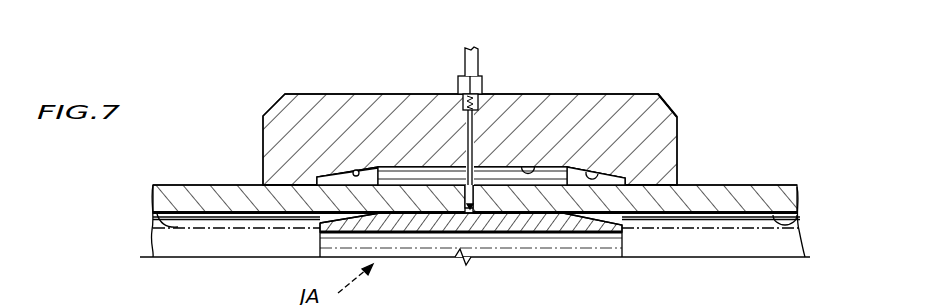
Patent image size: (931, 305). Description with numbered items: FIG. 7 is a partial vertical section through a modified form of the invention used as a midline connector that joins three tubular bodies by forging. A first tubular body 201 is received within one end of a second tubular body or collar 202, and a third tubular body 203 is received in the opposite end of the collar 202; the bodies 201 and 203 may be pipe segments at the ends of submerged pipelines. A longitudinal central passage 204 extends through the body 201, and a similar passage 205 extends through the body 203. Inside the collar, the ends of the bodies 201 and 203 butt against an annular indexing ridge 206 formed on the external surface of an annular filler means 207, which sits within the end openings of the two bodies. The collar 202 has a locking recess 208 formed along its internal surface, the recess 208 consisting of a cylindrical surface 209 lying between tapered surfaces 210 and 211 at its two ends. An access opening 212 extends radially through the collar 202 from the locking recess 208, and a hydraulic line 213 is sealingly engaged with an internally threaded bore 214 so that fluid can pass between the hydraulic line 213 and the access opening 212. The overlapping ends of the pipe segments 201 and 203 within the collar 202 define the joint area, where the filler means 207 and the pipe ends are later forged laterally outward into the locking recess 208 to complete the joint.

The first tubular body 201 is at (753, 190).
The second tubular body or collar 202 is at (667, 150).
The third tubular body 203 is at (196, 190).
The longitudinal central passage 204 is at (797, 223).
The passage 205 is at (178, 227).
The annular indexing ridge 206 is at (468, 208).
The annular filler means 207 is at (537, 223).
The locking recess 208 is at (416, 173).
The cylindrical surface 209 is at (545, 167).
The tapered surface 210 is at (660, 115).
The tapered surface 211 is at (355, 170).
The access opening 212 is at (473, 133).
The hydraulic line 213 is at (477, 50).
The internally threaded bore 214 is at (482, 99).